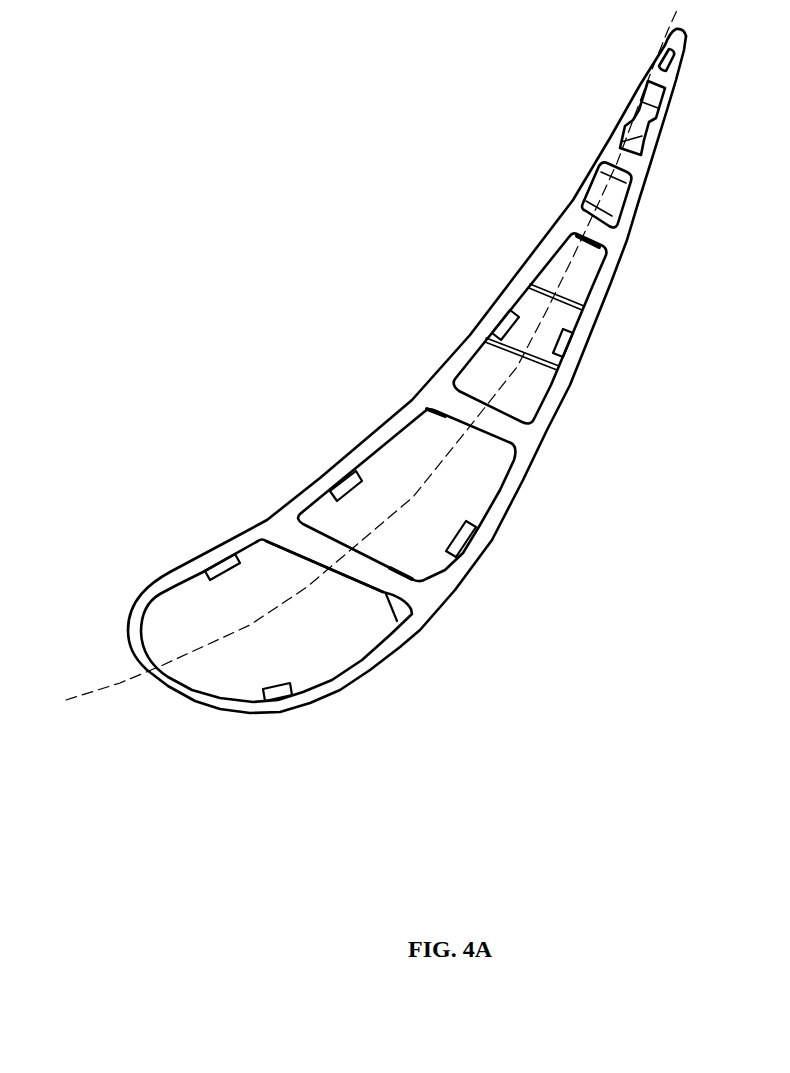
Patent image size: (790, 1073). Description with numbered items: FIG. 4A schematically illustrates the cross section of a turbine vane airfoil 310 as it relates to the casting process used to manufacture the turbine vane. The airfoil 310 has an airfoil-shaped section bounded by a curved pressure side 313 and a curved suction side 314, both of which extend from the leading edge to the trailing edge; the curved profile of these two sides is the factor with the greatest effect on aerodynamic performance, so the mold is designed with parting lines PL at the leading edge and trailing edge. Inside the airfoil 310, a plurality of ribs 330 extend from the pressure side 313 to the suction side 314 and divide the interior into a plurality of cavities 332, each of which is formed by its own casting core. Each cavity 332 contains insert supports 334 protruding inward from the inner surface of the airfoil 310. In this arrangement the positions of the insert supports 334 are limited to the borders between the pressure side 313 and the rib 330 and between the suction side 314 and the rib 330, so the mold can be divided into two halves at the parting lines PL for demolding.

The turbine vane airfoil 310 is at (407, 422).
The pressure side 313 is at (362, 444).
The suction side 314 is at (507, 507).
The rib 330 is at (413, 593).
The cavity 332 is at (220, 667).
The insert support 334 is at (221, 568).
The parting line PL is at (355, 366).